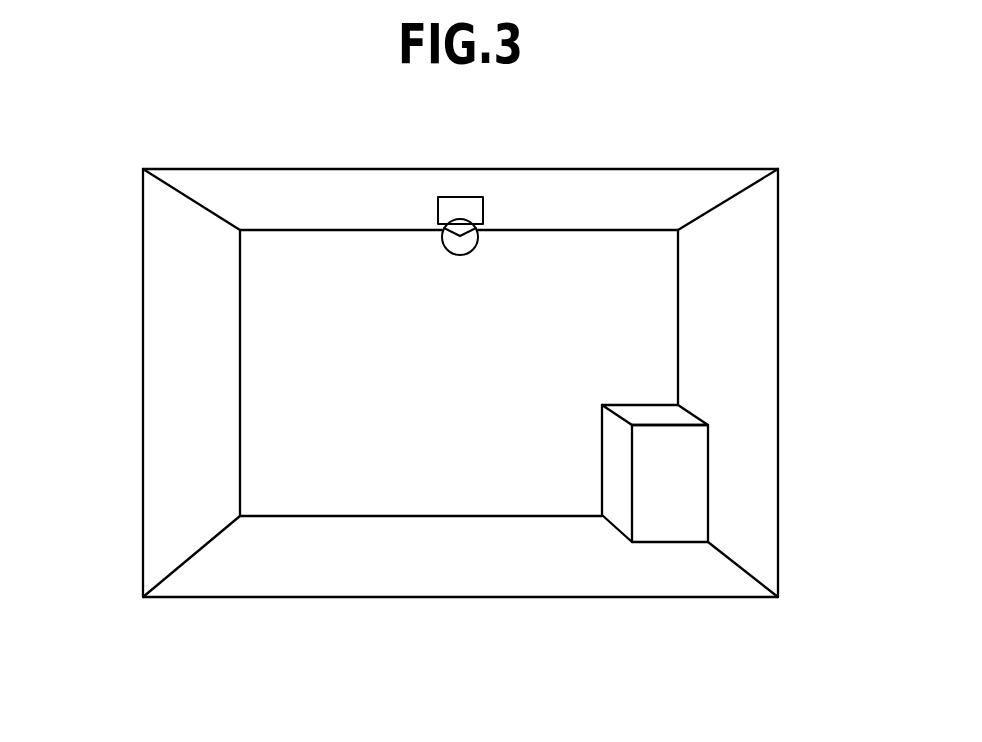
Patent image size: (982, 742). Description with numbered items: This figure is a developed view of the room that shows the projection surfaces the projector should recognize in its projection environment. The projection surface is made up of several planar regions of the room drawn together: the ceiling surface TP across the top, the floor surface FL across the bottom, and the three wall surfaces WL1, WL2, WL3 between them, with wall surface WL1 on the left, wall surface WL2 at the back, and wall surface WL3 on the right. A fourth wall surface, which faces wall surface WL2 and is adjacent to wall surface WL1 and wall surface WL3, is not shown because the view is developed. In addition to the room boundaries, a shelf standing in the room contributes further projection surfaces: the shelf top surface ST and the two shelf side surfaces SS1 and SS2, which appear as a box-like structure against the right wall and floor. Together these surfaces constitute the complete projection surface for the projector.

The wall surface WL1 is at (160, 302).
The wall surface WL2 is at (381, 253).
The wall surface WL3 is at (765, 312).
The ceiling surface TP is at (533, 183).
The floor surface FL is at (350, 587).
The shelf top surface ST is at (640, 413).
The shelf side surface SS1 is at (610, 453).
The shelf side surface SS2 is at (683, 470).